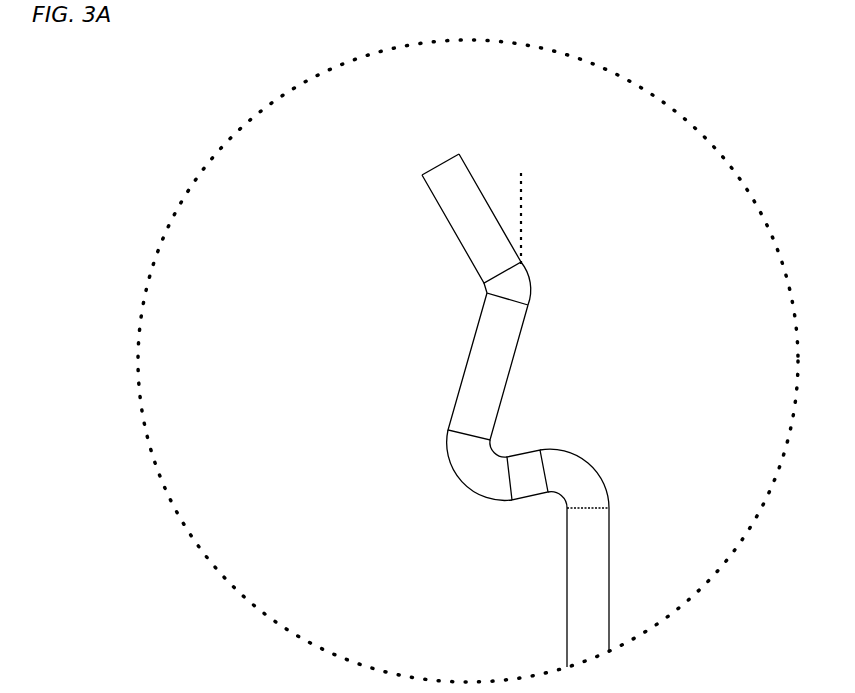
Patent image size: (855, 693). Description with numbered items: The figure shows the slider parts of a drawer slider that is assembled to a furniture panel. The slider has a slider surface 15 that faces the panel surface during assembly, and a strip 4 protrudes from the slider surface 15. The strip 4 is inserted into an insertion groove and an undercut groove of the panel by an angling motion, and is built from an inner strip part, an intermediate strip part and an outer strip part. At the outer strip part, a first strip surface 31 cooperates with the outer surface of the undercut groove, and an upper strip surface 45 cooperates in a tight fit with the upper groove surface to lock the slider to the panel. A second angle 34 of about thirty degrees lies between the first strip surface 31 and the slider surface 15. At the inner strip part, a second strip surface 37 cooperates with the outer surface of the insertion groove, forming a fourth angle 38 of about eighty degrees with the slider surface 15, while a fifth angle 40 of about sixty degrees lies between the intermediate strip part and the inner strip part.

The strip 4 is at (515, 366).
The slider surface 15 is at (566, 597).
The first strip surface 31 is at (457, 174).
The second angle 34 is at (481, 188).
The second strip surface 37 is at (517, 500).
The fourth angle 38 is at (524, 501).
The fifth angle 40 is at (503, 404).
The upper strip surface 45 is at (442, 158).